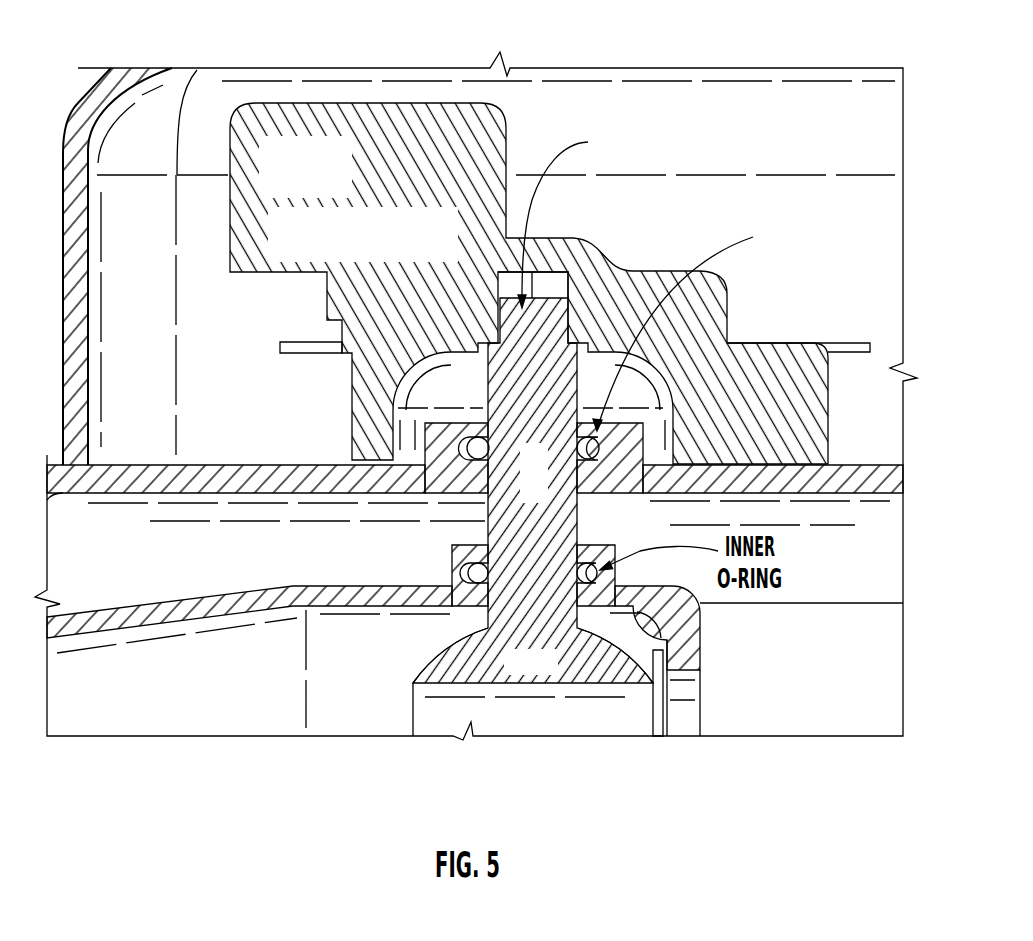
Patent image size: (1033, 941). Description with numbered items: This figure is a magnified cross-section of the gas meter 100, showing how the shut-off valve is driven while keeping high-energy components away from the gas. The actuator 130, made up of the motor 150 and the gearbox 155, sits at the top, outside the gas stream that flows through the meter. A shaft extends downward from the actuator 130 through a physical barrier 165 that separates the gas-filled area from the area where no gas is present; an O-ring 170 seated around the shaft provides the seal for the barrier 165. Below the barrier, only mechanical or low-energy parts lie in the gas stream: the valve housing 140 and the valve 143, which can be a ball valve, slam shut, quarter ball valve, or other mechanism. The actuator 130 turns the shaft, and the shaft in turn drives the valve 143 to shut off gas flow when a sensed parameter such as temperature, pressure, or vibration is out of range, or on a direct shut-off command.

The gas meter 100 is at (885, 53).
The actuator 130 is at (320, 196).
The motor 150 is at (335, 260).
The gearbox 155 is at (418, 260).
The O-ring 170 is at (805, 279).
The barrier 165 is at (600, 448).
The valve housing 140 is at (553, 553).
The valve 143 is at (450, 665).